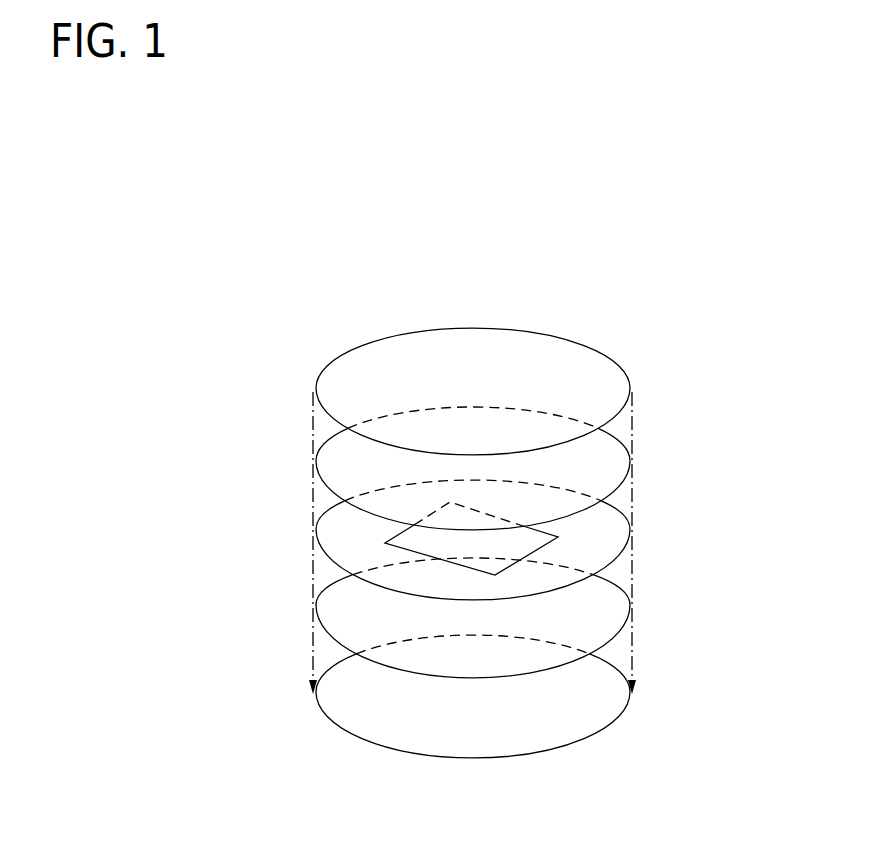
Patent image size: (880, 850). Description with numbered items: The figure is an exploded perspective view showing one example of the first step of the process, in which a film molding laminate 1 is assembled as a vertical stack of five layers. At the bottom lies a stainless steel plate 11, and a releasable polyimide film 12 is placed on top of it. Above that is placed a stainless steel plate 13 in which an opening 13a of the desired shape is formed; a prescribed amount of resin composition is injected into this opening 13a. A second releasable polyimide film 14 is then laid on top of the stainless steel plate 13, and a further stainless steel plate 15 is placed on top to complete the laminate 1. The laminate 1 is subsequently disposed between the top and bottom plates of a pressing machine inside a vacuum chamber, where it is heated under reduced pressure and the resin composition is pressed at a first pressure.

The film molding laminate 1 is at (488, 295).
The stainless steel plate 11 is at (607, 700).
The releasable polyimide film 12 is at (607, 608).
The stainless steel plate 13 is at (607, 535).
The opening 13a is at (317, 530).
The releasable polyimide film 14 is at (607, 468).
The stainless steel plate 15 is at (607, 384).